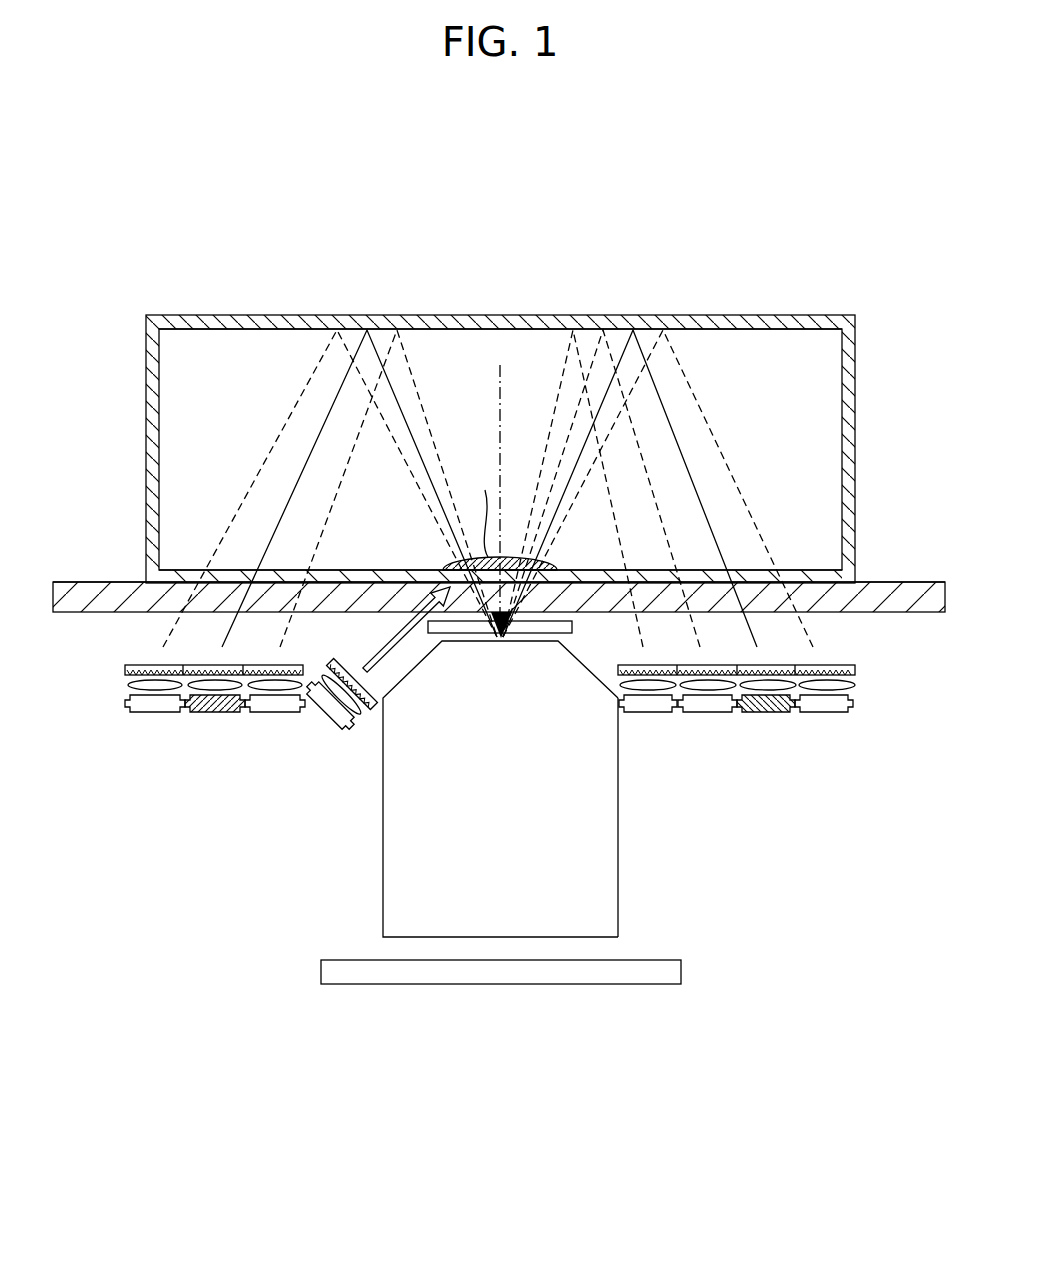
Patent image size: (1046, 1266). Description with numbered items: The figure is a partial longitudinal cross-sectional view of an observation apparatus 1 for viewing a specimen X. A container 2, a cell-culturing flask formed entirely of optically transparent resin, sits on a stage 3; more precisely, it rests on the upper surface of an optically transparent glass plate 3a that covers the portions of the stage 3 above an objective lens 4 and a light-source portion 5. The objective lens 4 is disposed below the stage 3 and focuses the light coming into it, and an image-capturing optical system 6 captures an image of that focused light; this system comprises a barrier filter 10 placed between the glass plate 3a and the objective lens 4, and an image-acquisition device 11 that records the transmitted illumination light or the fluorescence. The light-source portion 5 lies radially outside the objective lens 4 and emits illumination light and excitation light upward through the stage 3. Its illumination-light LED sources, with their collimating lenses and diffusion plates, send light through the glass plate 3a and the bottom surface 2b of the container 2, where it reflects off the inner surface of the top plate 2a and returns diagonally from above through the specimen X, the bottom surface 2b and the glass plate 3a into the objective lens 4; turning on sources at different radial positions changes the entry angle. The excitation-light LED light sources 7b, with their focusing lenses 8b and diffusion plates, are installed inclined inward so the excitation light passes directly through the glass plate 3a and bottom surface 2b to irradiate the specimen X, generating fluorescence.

The observation apparatus 1 is at (122, 182).
The container 2 is at (281, 302).
The top plate 2a is at (448, 315).
The bottom surface 2b is at (802, 570).
The stage 3 is at (71, 566).
The glass plate 3a is at (107, 582).
The objective lens 4 is at (618, 902).
The light-source portion 5 is at (779, 720).
The image-capturing optical system 6 is at (636, 843).
The LED light source 7b is at (322, 718).
The focusing lens 8b is at (360, 714).
The barrier filter 10 is at (538, 633).
The image-acquisition device 11 is at (510, 984).